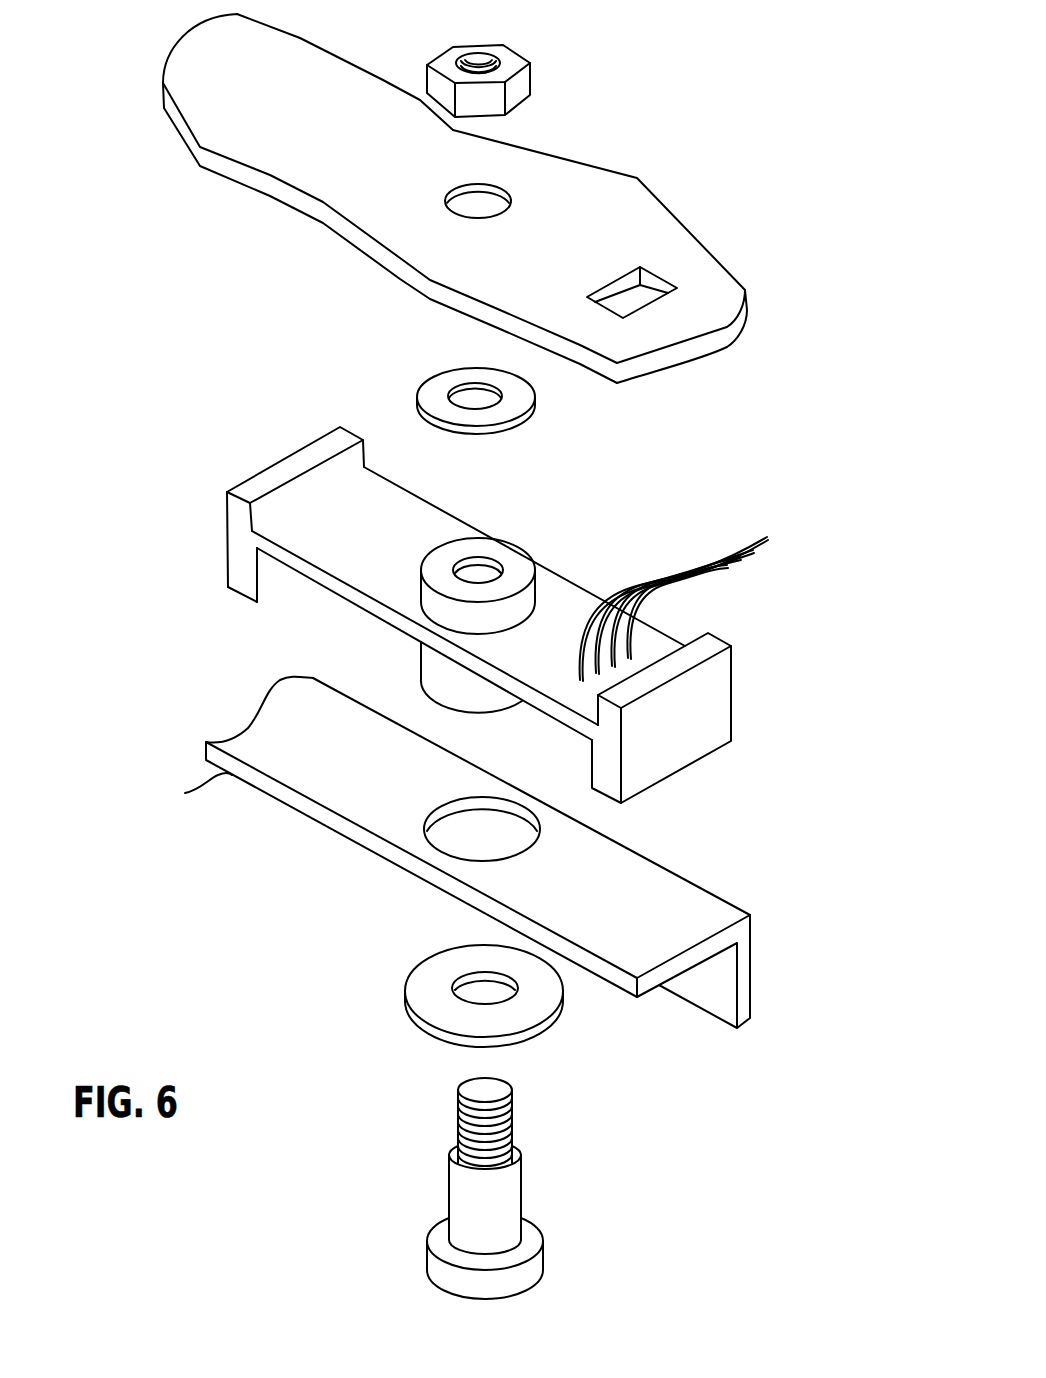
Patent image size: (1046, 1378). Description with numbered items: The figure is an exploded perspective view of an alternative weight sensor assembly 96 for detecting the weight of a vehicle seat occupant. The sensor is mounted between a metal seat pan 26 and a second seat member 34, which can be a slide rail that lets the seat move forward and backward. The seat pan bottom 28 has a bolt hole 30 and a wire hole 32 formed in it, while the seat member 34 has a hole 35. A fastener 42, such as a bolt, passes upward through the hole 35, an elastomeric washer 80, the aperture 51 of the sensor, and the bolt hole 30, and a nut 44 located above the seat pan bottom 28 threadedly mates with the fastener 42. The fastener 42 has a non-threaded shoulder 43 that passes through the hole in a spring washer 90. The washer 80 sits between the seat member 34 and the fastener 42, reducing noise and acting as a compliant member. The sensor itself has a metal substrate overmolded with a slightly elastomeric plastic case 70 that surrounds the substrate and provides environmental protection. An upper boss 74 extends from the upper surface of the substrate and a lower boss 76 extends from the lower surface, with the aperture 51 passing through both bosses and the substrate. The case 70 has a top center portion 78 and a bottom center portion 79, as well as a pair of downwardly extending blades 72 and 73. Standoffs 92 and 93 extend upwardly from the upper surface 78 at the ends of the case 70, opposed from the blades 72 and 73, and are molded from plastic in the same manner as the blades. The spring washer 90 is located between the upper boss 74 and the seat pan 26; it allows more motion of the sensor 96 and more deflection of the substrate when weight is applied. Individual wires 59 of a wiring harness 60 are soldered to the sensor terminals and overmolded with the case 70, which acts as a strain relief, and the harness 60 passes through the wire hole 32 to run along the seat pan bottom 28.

The seat pan 26 is at (248, 178).
The seat pan bottom 28 is at (361, 132).
The bolt hole 30 is at (445, 201).
The wire hole 32 is at (607, 290).
The seat member 34 is at (440, 852).
The hole 35 is at (429, 820).
The fastener 42 is at (430, 1277).
The non-threaded shoulder 43 is at (460, 1183).
The nut 44 is at (522, 58).
The aperture 51 is at (480, 572).
The wires 59 is at (721, 599).
The wiring harness 60 is at (727, 582).
The case 70 is at (465, 599).
The blade 72 is at (247, 598).
The blade 73 is at (687, 765).
The upper boss 74 is at (431, 553).
The lower boss 76 is at (425, 660).
The top center portion 78 is at (556, 598).
The bottom center portion 79 is at (352, 604).
The elastomeric washer 80 is at (404, 985).
The spring washer 90 is at (445, 380).
The standoff 92 is at (228, 507).
The standoff 93 is at (715, 718).
The weight sensor assembly 96 is at (226, 523).